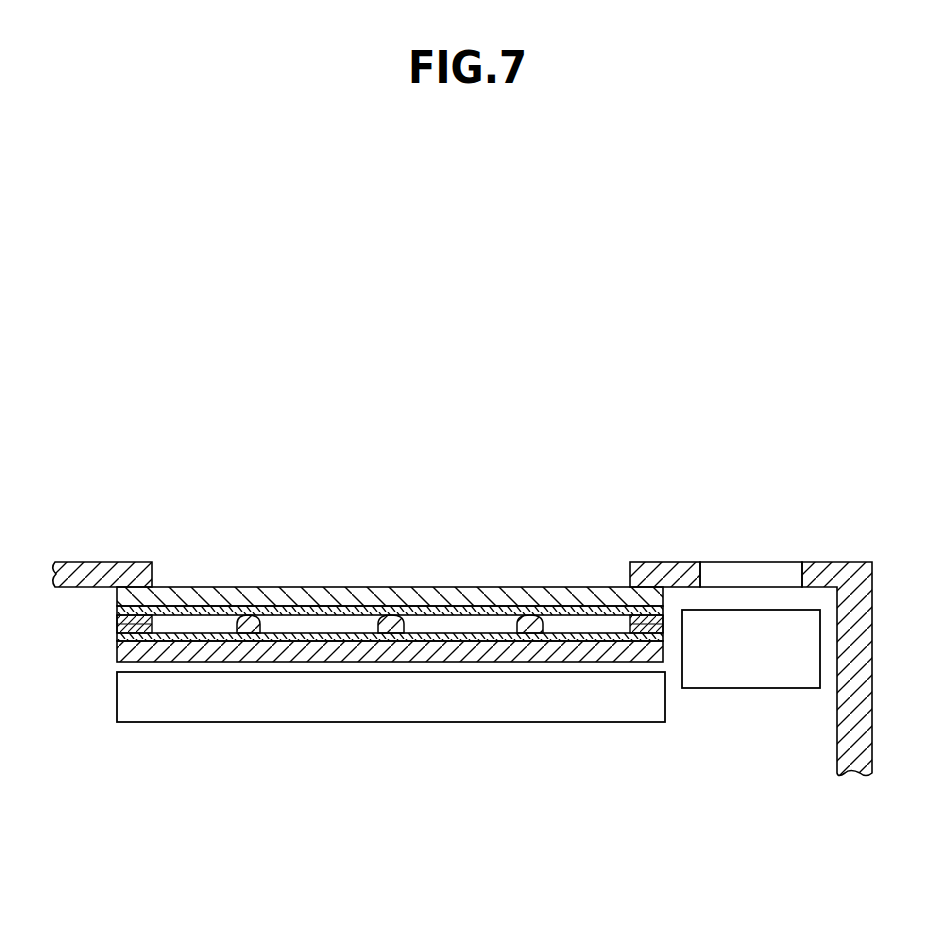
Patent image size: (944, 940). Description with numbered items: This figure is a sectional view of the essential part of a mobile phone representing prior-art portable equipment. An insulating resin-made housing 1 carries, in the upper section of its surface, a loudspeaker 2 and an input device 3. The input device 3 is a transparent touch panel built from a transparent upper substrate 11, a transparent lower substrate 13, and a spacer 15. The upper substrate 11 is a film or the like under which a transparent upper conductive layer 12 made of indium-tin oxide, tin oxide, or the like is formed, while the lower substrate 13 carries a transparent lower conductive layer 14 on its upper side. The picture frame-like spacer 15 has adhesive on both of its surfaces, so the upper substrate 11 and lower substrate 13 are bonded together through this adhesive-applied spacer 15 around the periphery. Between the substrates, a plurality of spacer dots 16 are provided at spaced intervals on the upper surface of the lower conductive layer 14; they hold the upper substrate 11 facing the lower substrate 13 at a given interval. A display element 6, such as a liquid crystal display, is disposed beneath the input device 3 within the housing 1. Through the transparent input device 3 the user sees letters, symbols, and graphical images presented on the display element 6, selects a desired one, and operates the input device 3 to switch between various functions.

The housing 1 is at (653, 575).
The loudspeaker 2 is at (730, 670).
The input device 3 is at (347, 636).
The display element 6 is at (585, 693).
The upper substrate 11 is at (220, 593).
The upper conductive layer 12 is at (287, 602).
The lower substrate 13 is at (183, 653).
The lower conductive layer 14 is at (223, 642).
The spacer 15 is at (118, 625).
The spacer dots 16 is at (385, 618).